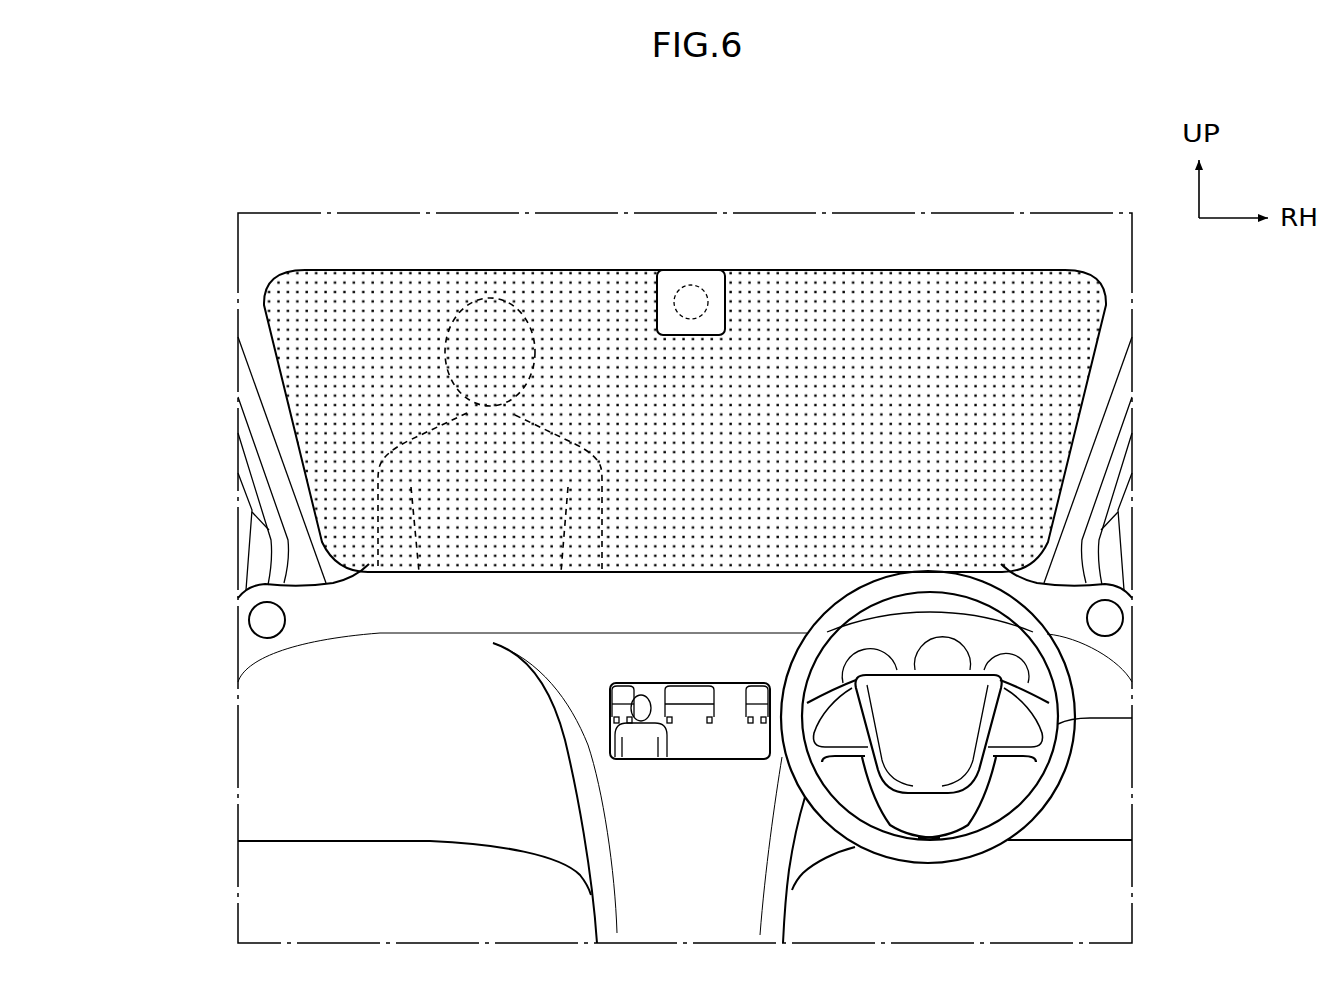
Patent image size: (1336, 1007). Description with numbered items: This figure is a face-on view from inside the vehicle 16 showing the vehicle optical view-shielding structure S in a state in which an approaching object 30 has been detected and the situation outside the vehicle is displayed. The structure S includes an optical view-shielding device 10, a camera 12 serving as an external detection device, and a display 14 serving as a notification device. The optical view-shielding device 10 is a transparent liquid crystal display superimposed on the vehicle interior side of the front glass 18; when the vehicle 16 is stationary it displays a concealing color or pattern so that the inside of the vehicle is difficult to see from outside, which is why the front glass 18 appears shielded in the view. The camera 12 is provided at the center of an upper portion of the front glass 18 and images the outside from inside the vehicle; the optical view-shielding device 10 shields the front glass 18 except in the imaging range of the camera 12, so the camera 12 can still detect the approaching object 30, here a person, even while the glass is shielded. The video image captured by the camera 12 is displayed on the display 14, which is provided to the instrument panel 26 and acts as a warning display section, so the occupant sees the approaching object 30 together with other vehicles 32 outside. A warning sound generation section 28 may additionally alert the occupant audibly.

The optical view-shielding device 10 is at (955, 290).
The front glass 18 is at (685, 357).
The camera 12 is at (692, 284).
The display 14 is at (666, 707).
The vehicle 16 is at (876, 147).
The instrument panel 26 is at (487, 604).
The warning sound generation section 28 is at (262, 620).
The approaching object 30 is at (488, 298).
The other vehicles 32 is at (613, 697).
The vehicle optical view-shielding structure S is at (490, 333).